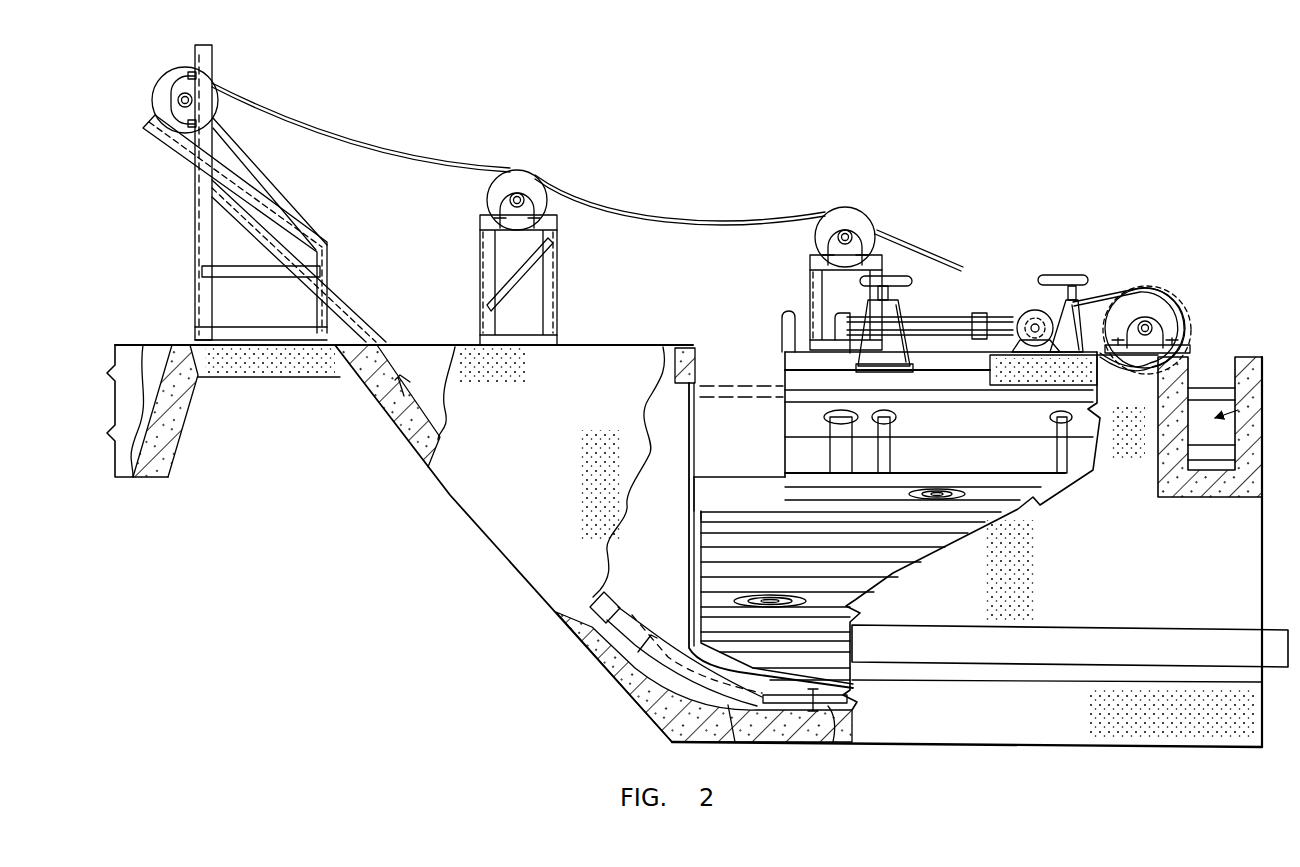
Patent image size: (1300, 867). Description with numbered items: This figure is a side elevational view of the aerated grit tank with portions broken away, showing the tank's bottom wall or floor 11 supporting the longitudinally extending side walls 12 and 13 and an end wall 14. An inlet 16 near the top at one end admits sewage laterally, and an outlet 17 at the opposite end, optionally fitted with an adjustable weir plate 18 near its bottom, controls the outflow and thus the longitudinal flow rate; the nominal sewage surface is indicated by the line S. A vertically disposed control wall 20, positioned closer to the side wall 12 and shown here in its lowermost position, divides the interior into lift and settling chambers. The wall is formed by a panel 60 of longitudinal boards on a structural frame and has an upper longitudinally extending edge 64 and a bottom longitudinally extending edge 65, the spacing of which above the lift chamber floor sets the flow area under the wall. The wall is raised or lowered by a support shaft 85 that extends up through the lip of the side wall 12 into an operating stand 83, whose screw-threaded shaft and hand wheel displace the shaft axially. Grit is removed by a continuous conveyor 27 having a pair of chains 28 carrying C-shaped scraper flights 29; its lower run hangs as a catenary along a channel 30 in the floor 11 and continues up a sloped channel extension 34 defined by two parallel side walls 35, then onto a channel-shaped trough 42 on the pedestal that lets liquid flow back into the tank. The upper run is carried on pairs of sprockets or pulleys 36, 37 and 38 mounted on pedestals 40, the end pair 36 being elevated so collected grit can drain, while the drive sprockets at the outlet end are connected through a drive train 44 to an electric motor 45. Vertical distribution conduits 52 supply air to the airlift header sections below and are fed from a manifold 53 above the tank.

The bottom wall or floor 11 is at (1068, 725).
The side wall 12 is at (785, 352).
The side wall 13 is at (1230, 548).
The end wall 14 is at (1262, 598).
The inlet 16 is at (728, 345).
The outlet 17 is at (1250, 395).
The weir plate 18 is at (1225, 435).
The wall 20 is at (737, 508).
The continuous conveyor 27 is at (605, 645).
The chains 28 is at (780, 703).
The scraper flights 29 is at (684, 653).
The channel 30 is at (833, 712).
The channel extension 34 is at (610, 596).
The side walls 35 is at (620, 355).
The sprockets or pulleys 36 is at (185, 75).
The sprockets or pulleys 37 is at (535, 178).
The sprockets or pulleys 38 is at (860, 205).
The pedestals 40 is at (283, 203).
The channel-shaped trough or channel 42 is at (347, 313).
The drive train 44 is at (1162, 290).
The electric motor 45 is at (1030, 312).
The vertical distribution conduit 52 is at (838, 432).
The manifold 53 is at (938, 318).
The panel 60 is at (702, 520).
The upper longitudinally extending edge 64 is at (978, 468).
The bottom longitudinally extending edge 65 is at (733, 707).
The operating stand 83 is at (895, 305).
The support shaft 85 is at (888, 430).
The surface of the sewage S is at (745, 385).